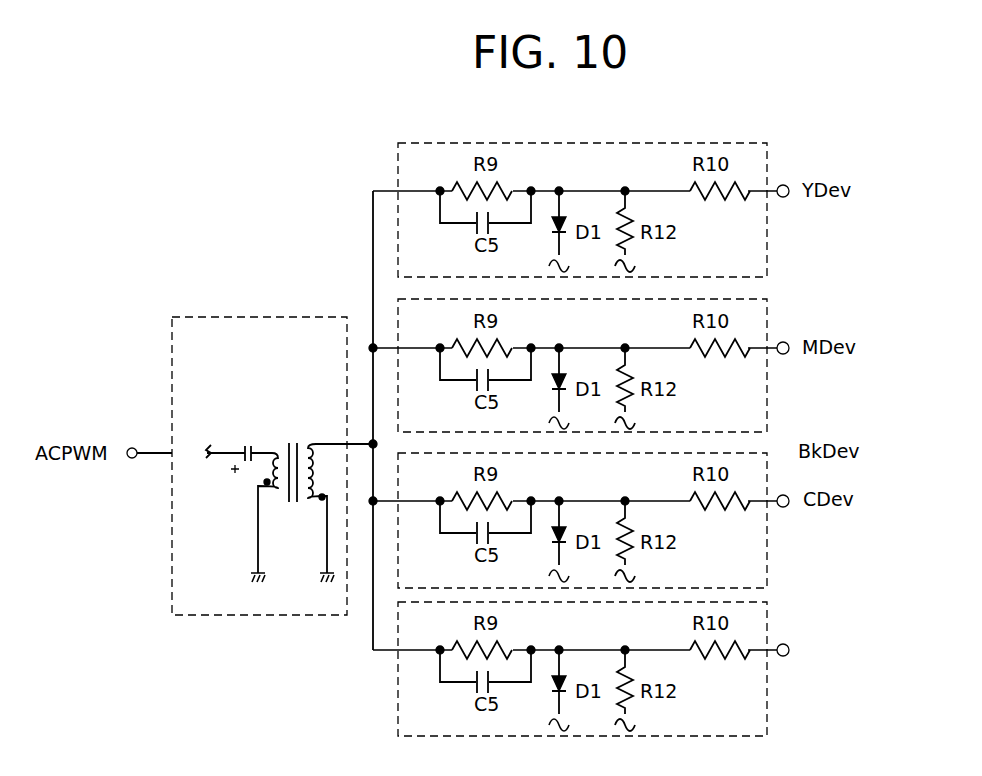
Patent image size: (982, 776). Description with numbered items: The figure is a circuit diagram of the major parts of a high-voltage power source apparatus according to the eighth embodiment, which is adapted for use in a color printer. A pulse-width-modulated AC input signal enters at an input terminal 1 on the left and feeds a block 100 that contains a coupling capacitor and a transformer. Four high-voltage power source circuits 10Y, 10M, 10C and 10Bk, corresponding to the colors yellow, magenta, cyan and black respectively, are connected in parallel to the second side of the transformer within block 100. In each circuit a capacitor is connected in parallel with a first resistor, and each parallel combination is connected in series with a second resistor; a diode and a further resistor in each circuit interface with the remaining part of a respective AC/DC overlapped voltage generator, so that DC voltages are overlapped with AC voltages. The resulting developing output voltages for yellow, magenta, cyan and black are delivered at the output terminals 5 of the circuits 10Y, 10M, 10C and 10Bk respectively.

The ACPWM input terminal 1 is at (132, 447).
The output terminal 5 is at (783, 184).
The transformer unit 100 is at (285, 316).
The high-voltage power source circuit 10Y is at (733, 251).
The high-voltage power source circuit 10M is at (736, 408).
The high-voltage power source circuit 10C is at (737, 561).
The high-voltage power source circuit 10Bk is at (741, 712).